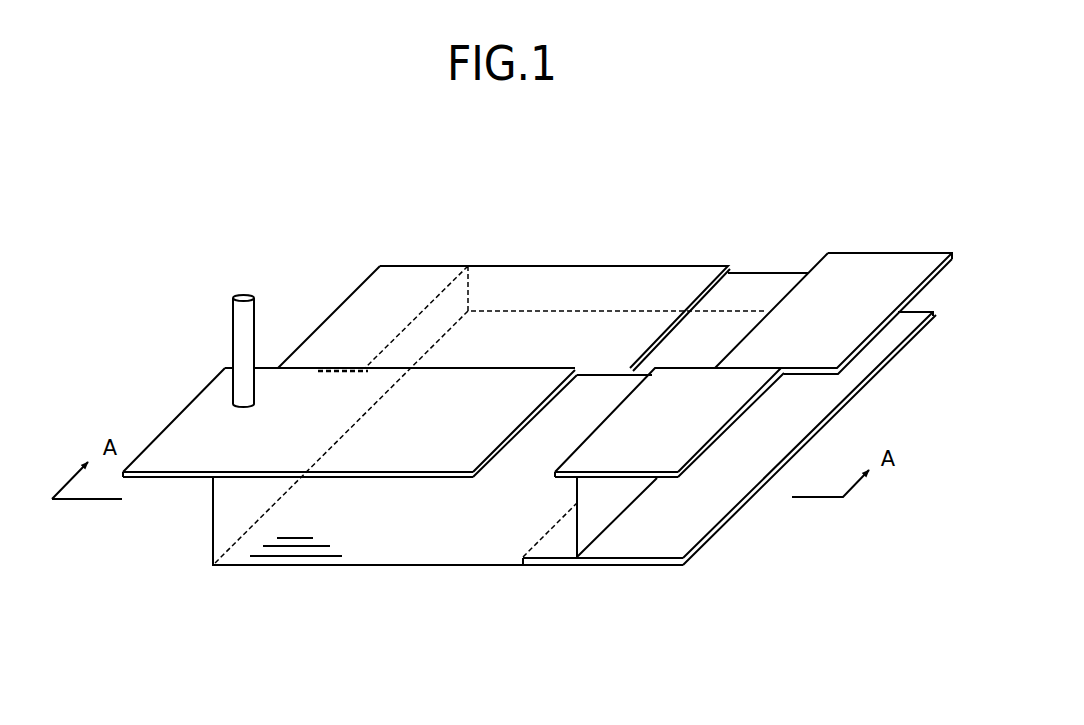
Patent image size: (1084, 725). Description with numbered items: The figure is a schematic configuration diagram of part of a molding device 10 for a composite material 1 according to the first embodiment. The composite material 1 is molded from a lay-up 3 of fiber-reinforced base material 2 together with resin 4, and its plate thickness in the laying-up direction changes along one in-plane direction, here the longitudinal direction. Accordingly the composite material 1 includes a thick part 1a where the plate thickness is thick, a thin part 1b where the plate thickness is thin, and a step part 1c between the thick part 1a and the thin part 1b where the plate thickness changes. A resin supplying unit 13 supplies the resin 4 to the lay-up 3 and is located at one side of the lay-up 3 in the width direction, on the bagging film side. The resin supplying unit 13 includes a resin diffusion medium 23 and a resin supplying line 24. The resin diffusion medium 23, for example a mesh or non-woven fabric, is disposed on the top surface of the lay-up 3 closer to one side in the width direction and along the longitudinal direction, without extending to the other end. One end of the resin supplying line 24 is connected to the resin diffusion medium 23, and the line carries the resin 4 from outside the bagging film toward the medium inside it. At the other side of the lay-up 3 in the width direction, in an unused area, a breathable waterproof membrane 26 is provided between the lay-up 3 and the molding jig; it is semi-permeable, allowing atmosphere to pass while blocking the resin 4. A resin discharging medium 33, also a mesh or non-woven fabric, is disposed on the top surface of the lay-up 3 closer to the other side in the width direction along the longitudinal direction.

The composite material 1 is at (681, 303).
The thick part 1a is at (387, 436).
The thin part 1b is at (409, 320).
The step part 1c is at (344, 364).
The fiber-reinforced base material 2 is at (287, 552).
The lay-up 3 is at (745, 272).
The resin 4 is at (767, 282).
The molding device 10 is at (770, 600).
The resin supplying unit 13 is at (243, 286).
The resin diffusion medium 23 is at (181, 453).
The resin supplying line 24 is at (214, 316).
The breathable waterproof membrane 26 is at (653, 540).
The resin discharging medium 33 is at (852, 267).